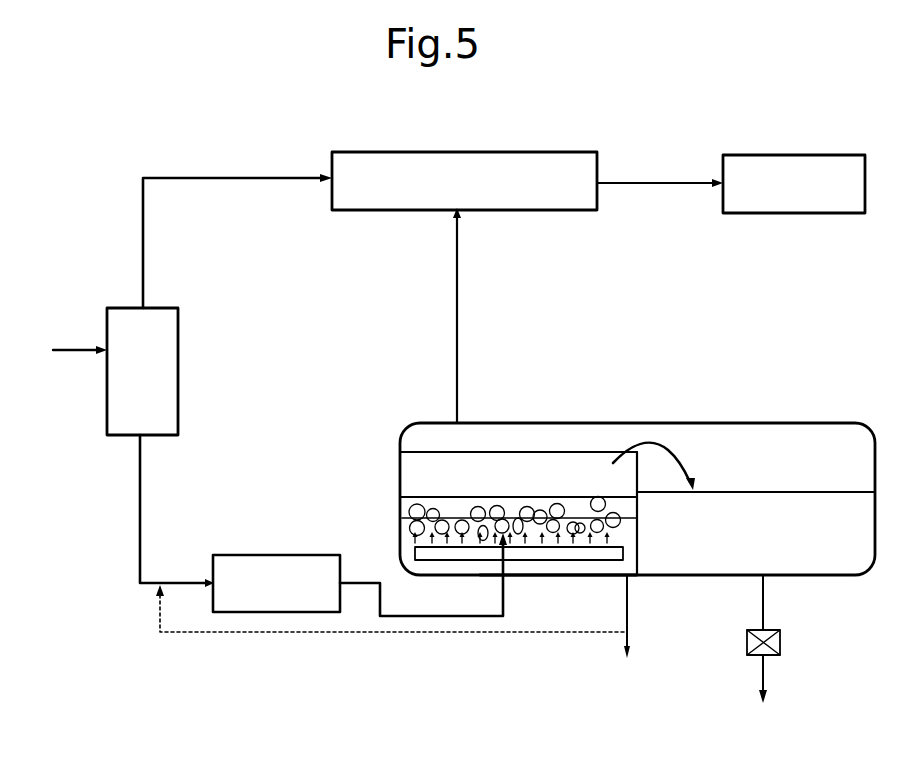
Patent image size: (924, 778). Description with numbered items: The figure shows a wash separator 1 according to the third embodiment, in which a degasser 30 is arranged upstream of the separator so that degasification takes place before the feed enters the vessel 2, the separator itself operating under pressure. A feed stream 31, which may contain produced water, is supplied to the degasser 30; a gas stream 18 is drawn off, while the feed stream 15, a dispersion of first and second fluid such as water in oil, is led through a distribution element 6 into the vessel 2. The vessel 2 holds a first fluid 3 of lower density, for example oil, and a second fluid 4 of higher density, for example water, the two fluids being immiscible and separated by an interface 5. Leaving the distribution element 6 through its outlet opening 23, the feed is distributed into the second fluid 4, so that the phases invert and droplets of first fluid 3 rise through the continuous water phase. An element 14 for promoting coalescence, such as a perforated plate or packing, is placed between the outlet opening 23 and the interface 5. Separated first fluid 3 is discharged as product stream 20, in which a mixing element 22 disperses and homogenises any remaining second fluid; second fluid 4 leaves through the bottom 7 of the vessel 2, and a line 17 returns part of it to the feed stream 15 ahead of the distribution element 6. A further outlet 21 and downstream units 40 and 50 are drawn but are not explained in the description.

The wash separator 1 is at (857, 424).
The vessel 2 is at (868, 478).
The first fluid 3 is at (557, 467).
The second fluid 4 is at (512, 520).
The interface 5 is at (475, 508).
The distribution element 6 is at (437, 553).
The bottom 7 is at (545, 577).
The element for promoting coalescence 14 is at (437, 517).
The feed stream 15 is at (438, 618).
The line 17 is at (203, 635).
The gas stream 18 is at (193, 175).
The product stream 20 is at (765, 603).
The discharge line 21 is at (627, 603).
The mixing element 22 is at (782, 645).
The outlet opening 23 is at (497, 510).
The degasser 30 is at (162, 358).
The feed stream 31 is at (68, 345).
The separating unit 40 is at (560, 165).
The collection unit 50 is at (810, 167).